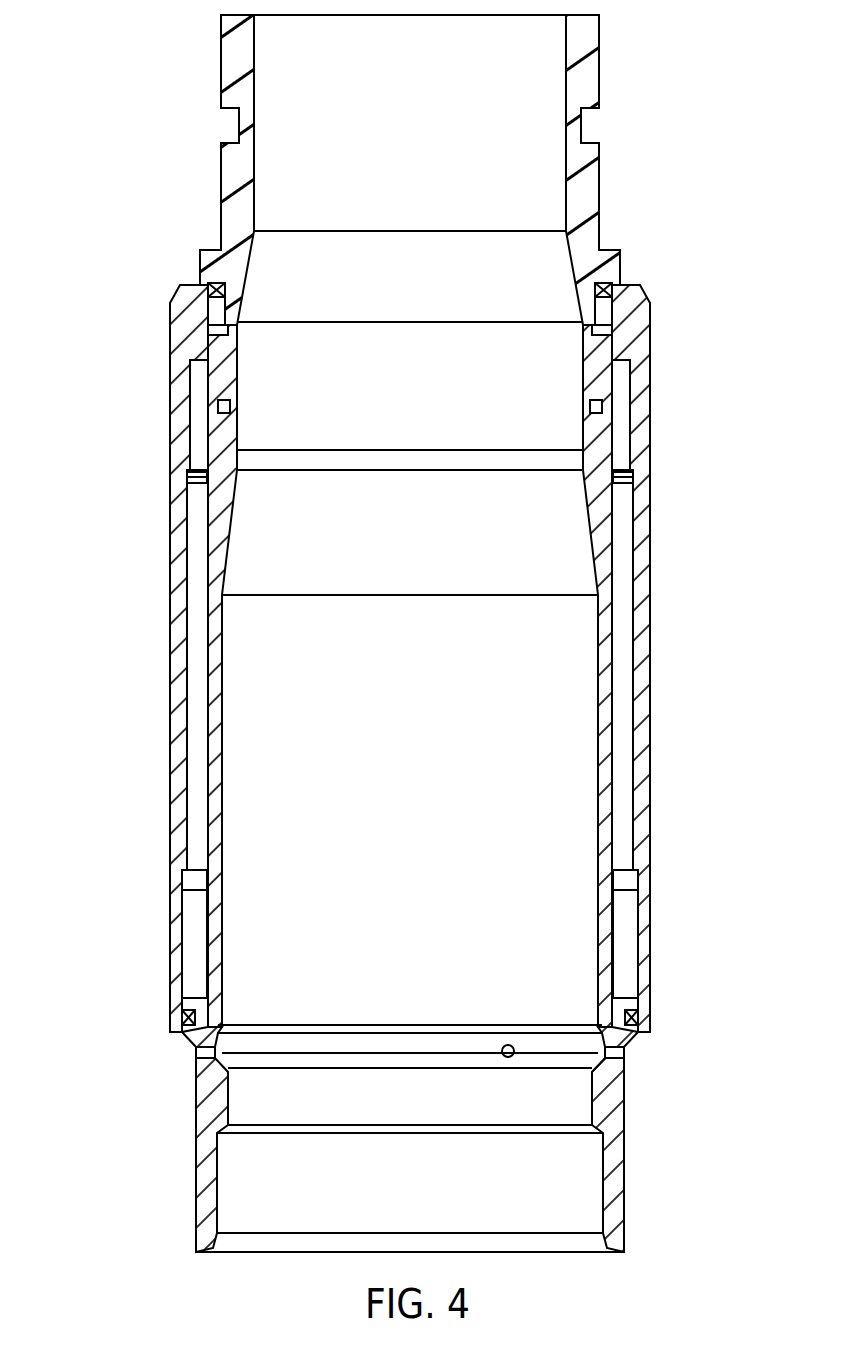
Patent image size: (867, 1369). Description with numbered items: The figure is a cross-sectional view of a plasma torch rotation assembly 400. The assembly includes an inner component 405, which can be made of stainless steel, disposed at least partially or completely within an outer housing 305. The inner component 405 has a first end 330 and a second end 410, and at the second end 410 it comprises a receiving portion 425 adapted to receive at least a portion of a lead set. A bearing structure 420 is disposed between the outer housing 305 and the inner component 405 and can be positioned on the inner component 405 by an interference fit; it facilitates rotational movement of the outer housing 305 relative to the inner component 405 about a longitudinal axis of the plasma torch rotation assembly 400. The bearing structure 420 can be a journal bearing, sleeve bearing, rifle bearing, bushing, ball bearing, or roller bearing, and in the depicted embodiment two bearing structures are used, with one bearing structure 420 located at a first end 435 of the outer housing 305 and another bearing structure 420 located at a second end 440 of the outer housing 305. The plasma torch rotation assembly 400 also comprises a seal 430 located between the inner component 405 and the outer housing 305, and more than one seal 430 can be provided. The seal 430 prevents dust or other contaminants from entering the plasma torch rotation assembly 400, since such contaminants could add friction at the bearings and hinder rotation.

The plasma torch rotation assembly 400 is at (97, 88).
The second end of the outer housing 440 is at (692, 358).
The outer housing 305 is at (168, 613).
The inner component 405 is at (219, 442).
The receiving portion 425 is at (219, 340).
The second end of the inner component 410 is at (623, 351).
The bearing structure 420 is at (196, 403).
The seal 430 is at (210, 288).
The first end of the outer housing 435 is at (666, 990).
The first end of the inner component 330 is at (669, 1161).